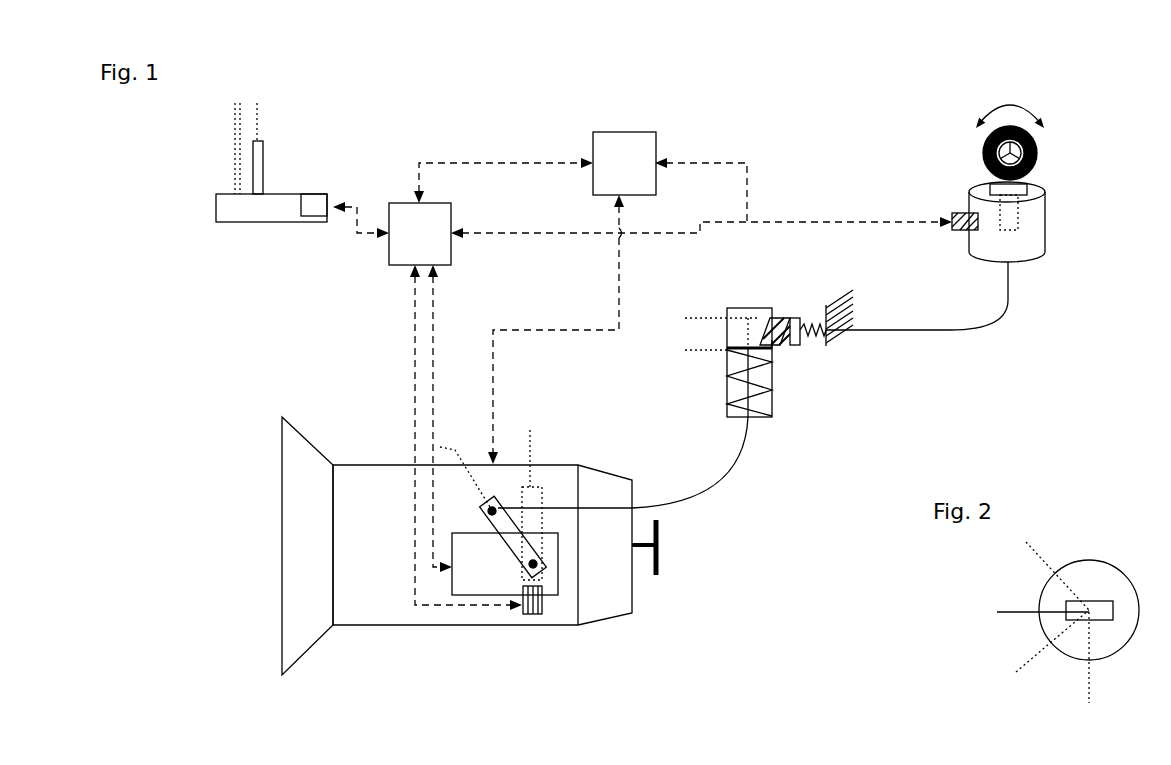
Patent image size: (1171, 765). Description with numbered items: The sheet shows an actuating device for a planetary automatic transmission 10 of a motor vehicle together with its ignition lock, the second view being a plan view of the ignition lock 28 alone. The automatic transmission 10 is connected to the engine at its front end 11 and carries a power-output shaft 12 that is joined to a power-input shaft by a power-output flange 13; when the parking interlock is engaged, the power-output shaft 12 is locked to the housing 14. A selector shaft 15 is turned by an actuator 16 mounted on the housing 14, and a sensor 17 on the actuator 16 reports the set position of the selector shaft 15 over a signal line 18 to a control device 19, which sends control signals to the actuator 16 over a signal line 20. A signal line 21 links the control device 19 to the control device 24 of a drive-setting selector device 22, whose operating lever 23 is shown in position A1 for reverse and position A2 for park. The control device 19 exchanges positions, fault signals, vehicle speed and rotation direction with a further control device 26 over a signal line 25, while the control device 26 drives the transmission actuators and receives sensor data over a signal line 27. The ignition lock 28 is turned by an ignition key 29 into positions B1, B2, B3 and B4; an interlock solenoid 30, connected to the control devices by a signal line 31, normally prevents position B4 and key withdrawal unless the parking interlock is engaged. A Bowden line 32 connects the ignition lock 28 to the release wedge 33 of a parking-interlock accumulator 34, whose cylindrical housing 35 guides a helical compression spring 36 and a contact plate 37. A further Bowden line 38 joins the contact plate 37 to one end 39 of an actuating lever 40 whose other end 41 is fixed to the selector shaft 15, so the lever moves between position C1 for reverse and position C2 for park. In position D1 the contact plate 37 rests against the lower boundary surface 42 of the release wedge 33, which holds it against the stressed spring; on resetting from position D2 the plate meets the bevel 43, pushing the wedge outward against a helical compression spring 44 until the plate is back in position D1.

In FIG. 1, the automatic transmission 10 is at (387, 573).
In FIG. 1, the front end 11 is at (283, 673).
In FIG. 1, the power-output shaft 12 is at (637, 548).
In FIG. 1, the power-output flange 13 is at (660, 563).
In FIG. 1, the housing 14 is at (350, 627).
In FIG. 1, the selector shaft 15 is at (517, 595).
In FIG. 1, the actuator 16 is at (486, 513).
In FIG. 1, the sensor 17 is at (523, 600).
In FIG. 1, the signal line 18 is at (413, 355).
In FIG. 1, the control device 19 is at (420, 234).
In FIG. 1, the signal line 20 is at (432, 343).
In FIG. 1, the signal line 21 is at (349, 207).
In FIG. 1, the drive-setting selector device 22 is at (200, 196).
In FIG. 1, the operating lever 23 is at (263, 148).
In FIG. 1, the control device 24 is at (312, 196).
In FIG. 1, the signal line 25 is at (458, 160).
In FIG. 1, the control device 26 is at (624, 163).
In FIG. 1, the signal line 27 is at (491, 335).
In FIG. 1, the ignition lock 28 is at (1047, 210).
In FIG. 2, the ignition lock 28 is at (1104, 563).
In FIG. 1, the ignition key 29 is at (984, 143).
In FIG. 1, the interlock solenoid 30 is at (952, 215).
In FIG. 1, the signal line 31 is at (540, 233).
In FIG. 1, the Bowden line 32 is at (972, 330).
In FIG. 1, the release wedge 33 is at (808, 338).
In FIG. 1, the parking-interlock accumulator 34 is at (825, 303).
In FIG. 1, the housing 35 is at (772, 418).
In FIG. 1, the helical compression spring 36 is at (758, 418).
In FIG. 1, the contact plate 37 is at (772, 348).
In FIG. 1, the Bowden line 38 is at (695, 503).
In FIG. 1, the end 39 is at (499, 548).
In FIG. 1, the actuating lever 40 is at (509, 536).
In FIG. 1, the other end 41 is at (543, 575).
In FIG. 1, the lower boundary surface 42 is at (778, 345).
In FIG. 1, the bevel 43 is at (773, 318).
In FIG. 1, the helical compression spring 44 is at (832, 338).
In FIG. 1, the position A1 is at (258, 108).
In FIG. 1, the position A2 is at (234, 108).
In FIG. 2, the position B1 is at (997, 612).
In FIG. 2, the position B2 is at (1026, 542).
In FIG. 2, the position B3 is at (1016, 672).
In FIG. 2, the position B4 is at (1088, 680).
In FIG. 1, the position C1 is at (440, 447).
In FIG. 1, the position C2 is at (530, 430).
In FIG. 1, the position D1 is at (688, 350).
In FIG. 1, the position D2 is at (703, 318).